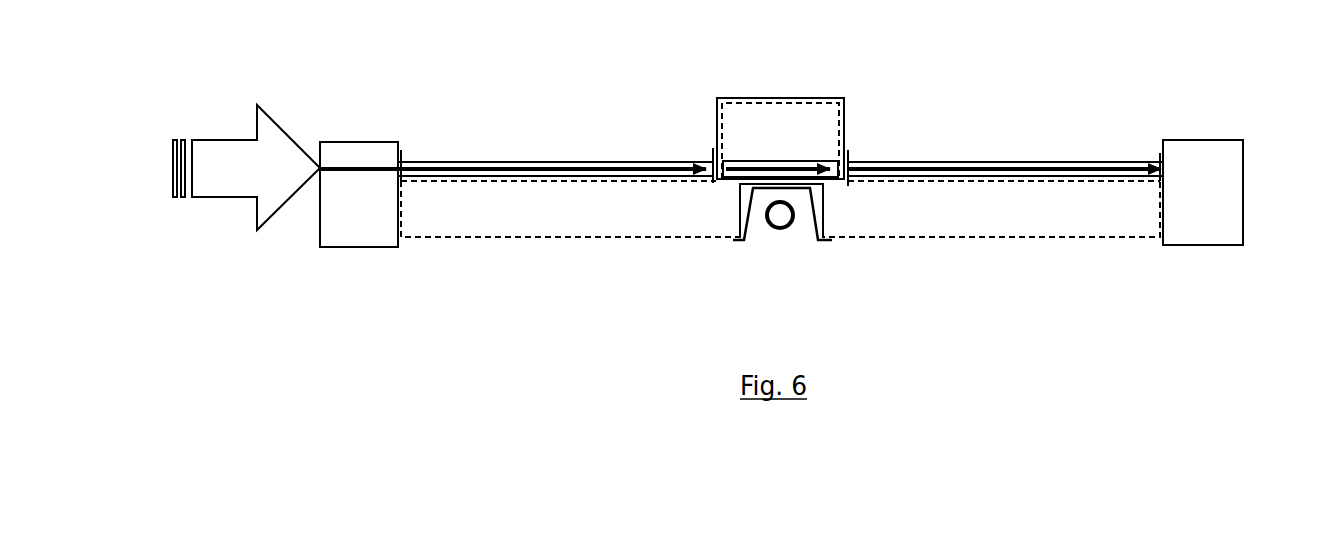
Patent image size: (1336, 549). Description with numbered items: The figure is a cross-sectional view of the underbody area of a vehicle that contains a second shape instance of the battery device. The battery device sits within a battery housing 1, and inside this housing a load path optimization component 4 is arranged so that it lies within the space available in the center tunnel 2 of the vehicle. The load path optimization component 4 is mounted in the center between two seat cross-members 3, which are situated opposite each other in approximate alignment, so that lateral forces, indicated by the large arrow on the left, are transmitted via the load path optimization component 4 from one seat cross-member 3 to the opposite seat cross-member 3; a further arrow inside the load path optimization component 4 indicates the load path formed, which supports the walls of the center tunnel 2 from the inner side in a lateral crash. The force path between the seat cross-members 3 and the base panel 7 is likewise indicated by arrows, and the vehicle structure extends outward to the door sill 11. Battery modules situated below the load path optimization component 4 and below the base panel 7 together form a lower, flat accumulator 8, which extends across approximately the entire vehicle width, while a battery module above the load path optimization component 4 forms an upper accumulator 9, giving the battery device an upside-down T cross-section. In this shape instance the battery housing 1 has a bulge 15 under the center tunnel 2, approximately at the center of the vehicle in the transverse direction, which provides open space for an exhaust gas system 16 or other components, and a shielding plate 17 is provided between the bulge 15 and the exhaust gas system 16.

The battery housing 1 is at (594, 239).
The center tunnel 2 is at (720, 94).
The seat cross-member 3 is at (525, 160).
The load path optimization component 4 is at (810, 158).
The base panel 7 is at (1000, 181).
The lower, flat accumulator 8 is at (503, 212).
The upper accumulator 9 is at (798, 122).
The door sill 11 is at (1222, 137).
The bulge 15 is at (738, 207).
The exhaust gas system 16 is at (793, 229).
The shielding plate 17 is at (736, 243).